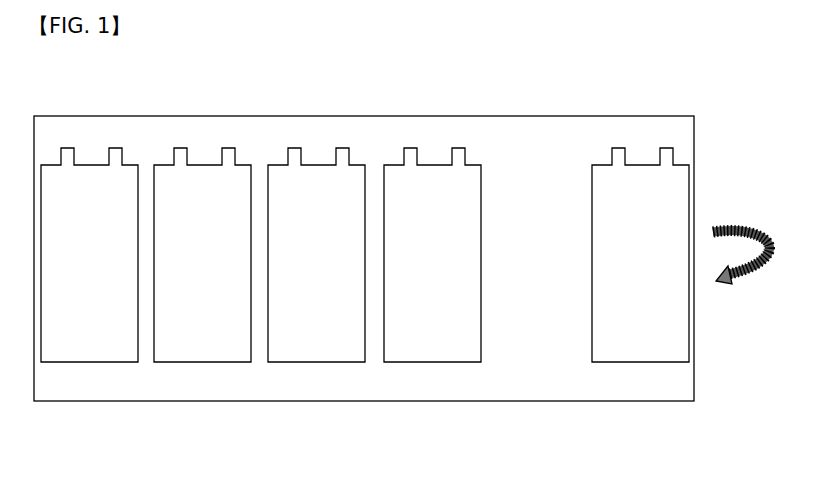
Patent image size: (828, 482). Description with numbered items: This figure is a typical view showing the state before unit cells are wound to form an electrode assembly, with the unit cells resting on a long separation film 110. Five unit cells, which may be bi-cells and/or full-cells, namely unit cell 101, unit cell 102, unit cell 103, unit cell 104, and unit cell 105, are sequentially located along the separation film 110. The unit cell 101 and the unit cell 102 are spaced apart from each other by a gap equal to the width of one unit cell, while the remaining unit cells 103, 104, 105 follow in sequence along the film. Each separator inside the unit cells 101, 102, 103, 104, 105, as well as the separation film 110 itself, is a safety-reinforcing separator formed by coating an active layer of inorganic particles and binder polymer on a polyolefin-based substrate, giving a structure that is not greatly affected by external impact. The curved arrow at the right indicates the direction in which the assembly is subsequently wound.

The separation film 110 is at (678, 143).
The unit cell 101 is at (635, 362).
The unit cell 102 is at (432, 362).
The unit cell 103 is at (315, 362).
The unit cell 104 is at (188, 362).
The unit cell 105 is at (80, 362).